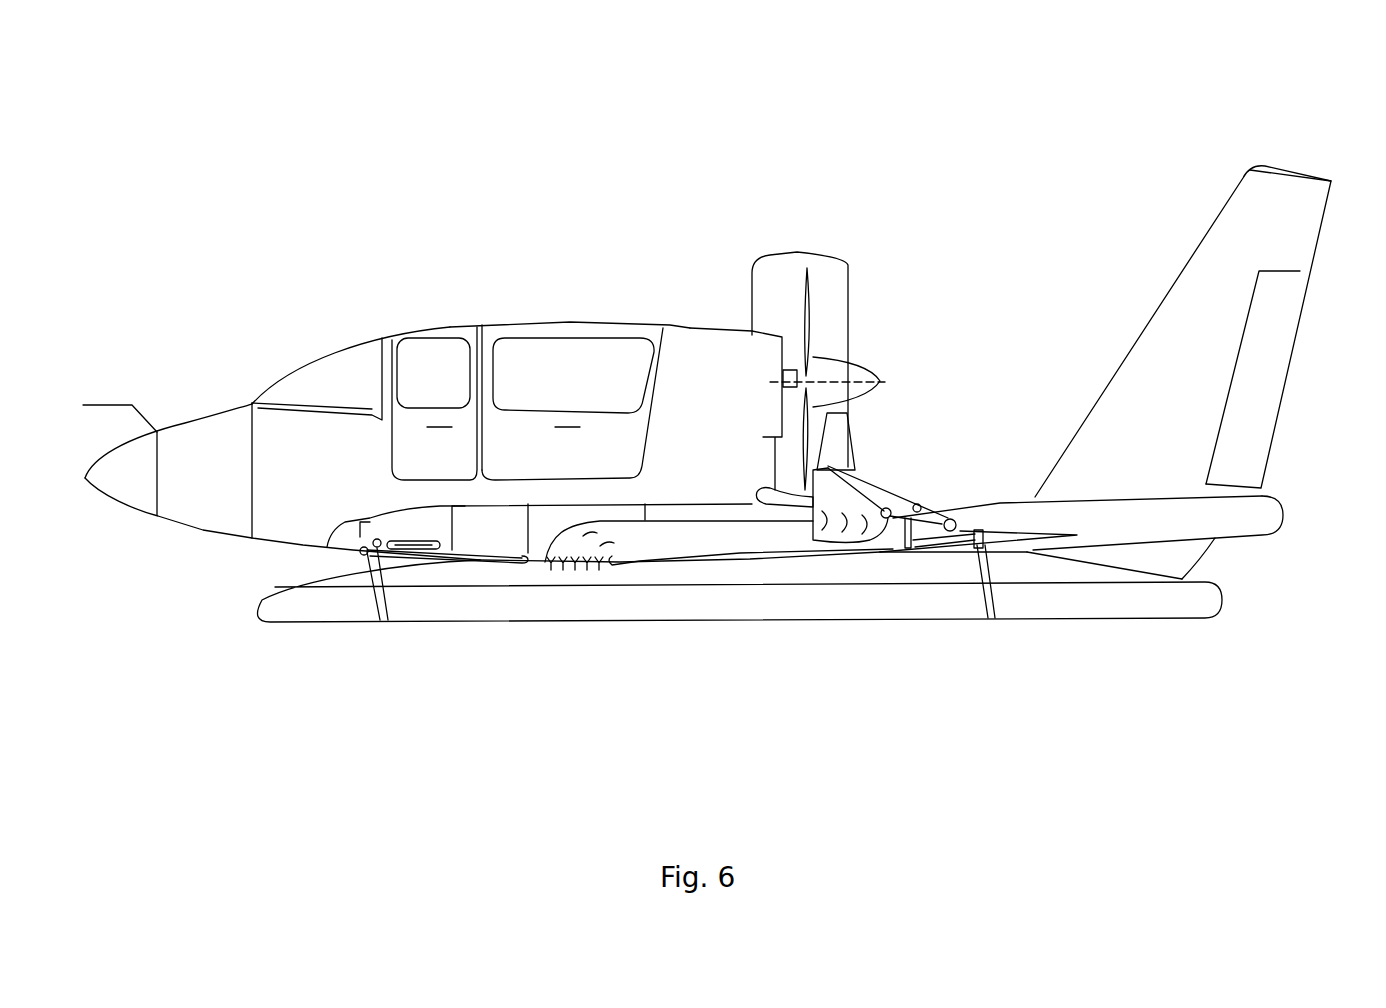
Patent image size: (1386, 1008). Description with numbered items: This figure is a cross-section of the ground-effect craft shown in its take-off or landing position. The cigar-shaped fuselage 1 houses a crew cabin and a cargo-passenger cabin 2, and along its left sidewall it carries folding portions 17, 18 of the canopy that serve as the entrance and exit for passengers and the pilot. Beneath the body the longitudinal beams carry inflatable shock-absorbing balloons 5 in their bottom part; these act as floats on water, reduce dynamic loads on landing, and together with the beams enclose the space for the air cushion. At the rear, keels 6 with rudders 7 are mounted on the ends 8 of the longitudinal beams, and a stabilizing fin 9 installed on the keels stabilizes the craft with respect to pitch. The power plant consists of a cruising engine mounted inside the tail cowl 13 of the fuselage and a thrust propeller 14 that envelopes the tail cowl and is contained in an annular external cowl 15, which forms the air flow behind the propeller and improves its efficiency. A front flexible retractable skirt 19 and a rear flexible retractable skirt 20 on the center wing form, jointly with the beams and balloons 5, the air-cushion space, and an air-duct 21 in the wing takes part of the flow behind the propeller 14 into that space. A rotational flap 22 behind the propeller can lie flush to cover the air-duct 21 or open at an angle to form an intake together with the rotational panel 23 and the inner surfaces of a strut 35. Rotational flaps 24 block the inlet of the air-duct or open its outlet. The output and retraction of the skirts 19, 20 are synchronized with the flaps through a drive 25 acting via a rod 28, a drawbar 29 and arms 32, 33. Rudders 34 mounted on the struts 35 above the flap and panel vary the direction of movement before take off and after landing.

The fuselage 1 is at (235, 423).
The cargo-passenger cabin 2 is at (362, 460).
The inflatable shock-absorbing balloons 5 is at (823, 602).
The keel 6 is at (1261, 259).
The rudder 7 is at (1242, 395).
The end of longitudinal beam 8 is at (1220, 518).
The stabilizing fin 9 is at (1263, 172).
The tail cowl 13 is at (722, 357).
The thrust propeller 14 is at (810, 268).
The annular external cowl 15 is at (767, 252).
The folding portion of canopy 17 is at (462, 435).
The folding portion of canopy 18 is at (608, 448).
The front flexible retractable skirt 19 is at (365, 572).
The rear flexible retractable skirt 20 is at (985, 545).
The air-duct 21 is at (707, 540).
The rotational flap 22 is at (887, 513).
The rotational panel 23 is at (917, 508).
The rotational flaps 24 is at (590, 578).
The electric or hydraulic drive 25 is at (414, 545).
The rod 28 is at (982, 503).
The drawbar 29 is at (965, 540).
The arm 32 is at (990, 545).
The arm 33 is at (907, 548).
The rudder of take-off and landing means 34 is at (832, 468).
The strut 35 is at (872, 476).